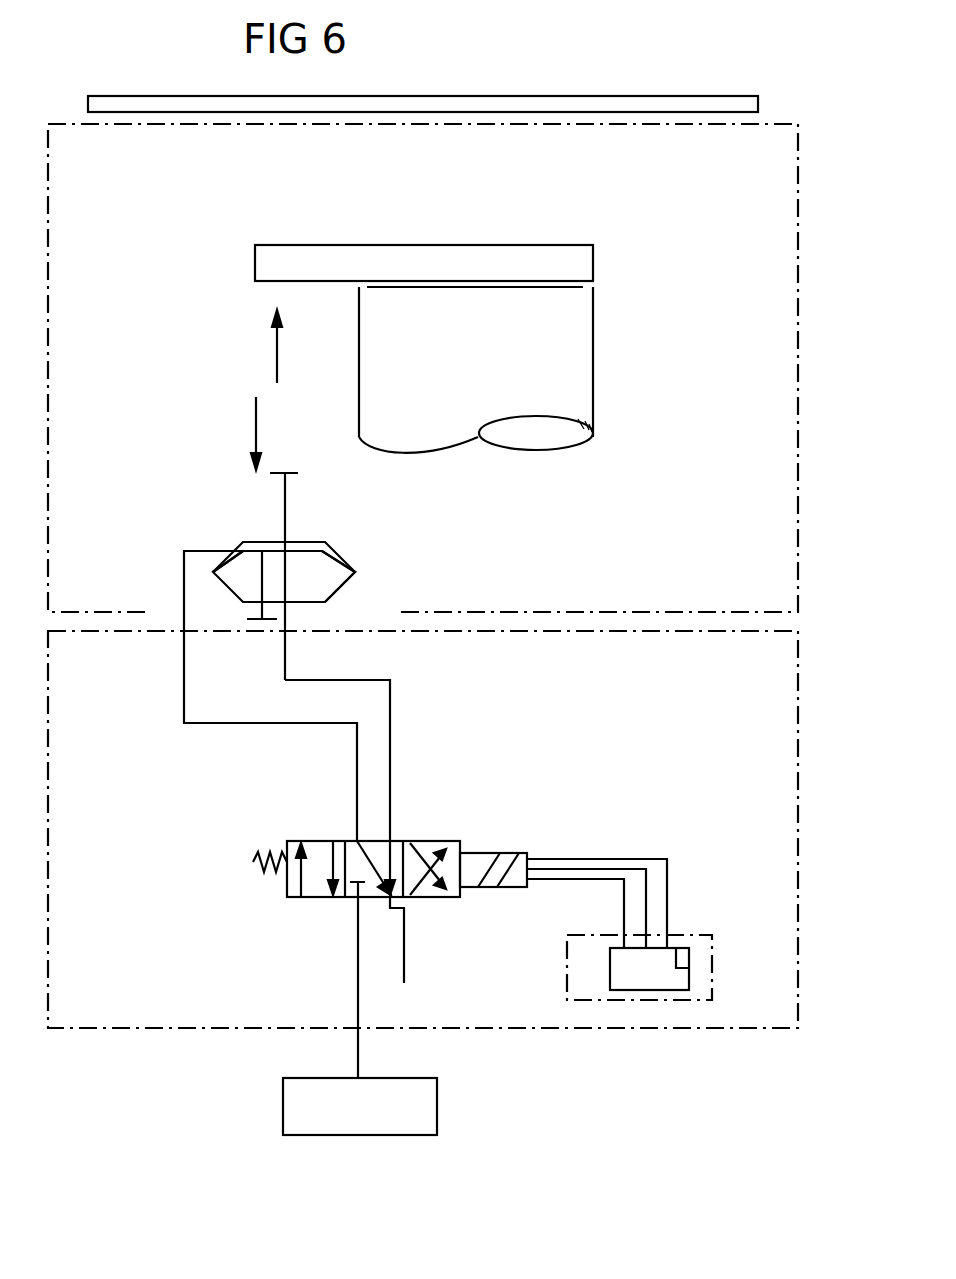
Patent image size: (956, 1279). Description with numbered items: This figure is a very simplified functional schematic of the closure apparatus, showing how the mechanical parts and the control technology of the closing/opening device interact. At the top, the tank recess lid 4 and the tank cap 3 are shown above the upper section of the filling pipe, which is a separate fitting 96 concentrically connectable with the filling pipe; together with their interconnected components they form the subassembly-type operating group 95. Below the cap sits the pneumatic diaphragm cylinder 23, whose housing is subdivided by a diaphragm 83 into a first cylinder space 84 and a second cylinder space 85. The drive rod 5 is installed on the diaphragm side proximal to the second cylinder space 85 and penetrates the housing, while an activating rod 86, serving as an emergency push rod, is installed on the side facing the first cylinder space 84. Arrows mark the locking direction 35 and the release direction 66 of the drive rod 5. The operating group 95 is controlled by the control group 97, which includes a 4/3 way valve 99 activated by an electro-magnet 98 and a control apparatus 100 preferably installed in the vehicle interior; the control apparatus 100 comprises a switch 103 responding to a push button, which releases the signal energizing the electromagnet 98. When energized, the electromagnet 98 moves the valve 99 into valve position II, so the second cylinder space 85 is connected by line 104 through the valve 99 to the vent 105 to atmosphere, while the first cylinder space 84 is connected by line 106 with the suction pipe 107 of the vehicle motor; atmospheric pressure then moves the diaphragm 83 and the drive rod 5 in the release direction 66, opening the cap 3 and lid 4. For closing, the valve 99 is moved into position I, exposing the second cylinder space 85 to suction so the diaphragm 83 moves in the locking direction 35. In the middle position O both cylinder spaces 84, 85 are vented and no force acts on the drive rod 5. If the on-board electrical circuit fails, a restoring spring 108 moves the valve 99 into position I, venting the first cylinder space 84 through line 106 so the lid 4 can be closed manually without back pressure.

The tank cap 3 is at (497, 262).
The tank recess lid 4 is at (466, 102).
The drive rod 5 is at (287, 503).
The pneumatic diaphragm cylinder 23 is at (360, 555).
The locking direction 35 is at (277, 355).
The release direction 66 is at (256, 420).
The diaphragm 83 is at (233, 563).
The first cylinder space 84 is at (328, 578).
The second cylinder space 85 is at (330, 540).
The activating rod 86 is at (262, 577).
The operating group 95 is at (800, 395).
The fitting 96 is at (567, 342).
The control group 97 is at (800, 827).
The electro-magnet 98 is at (482, 850).
The 4/3 way valve 99 is at (338, 840).
The control apparatus 100 is at (712, 972).
The switch 103 is at (682, 950).
The line 104 is at (184, 697).
The vent 105 is at (404, 965).
The line 106 is at (390, 712).
The suction pipe 107 is at (293, 1105).
The restoring spring 108 is at (258, 870).